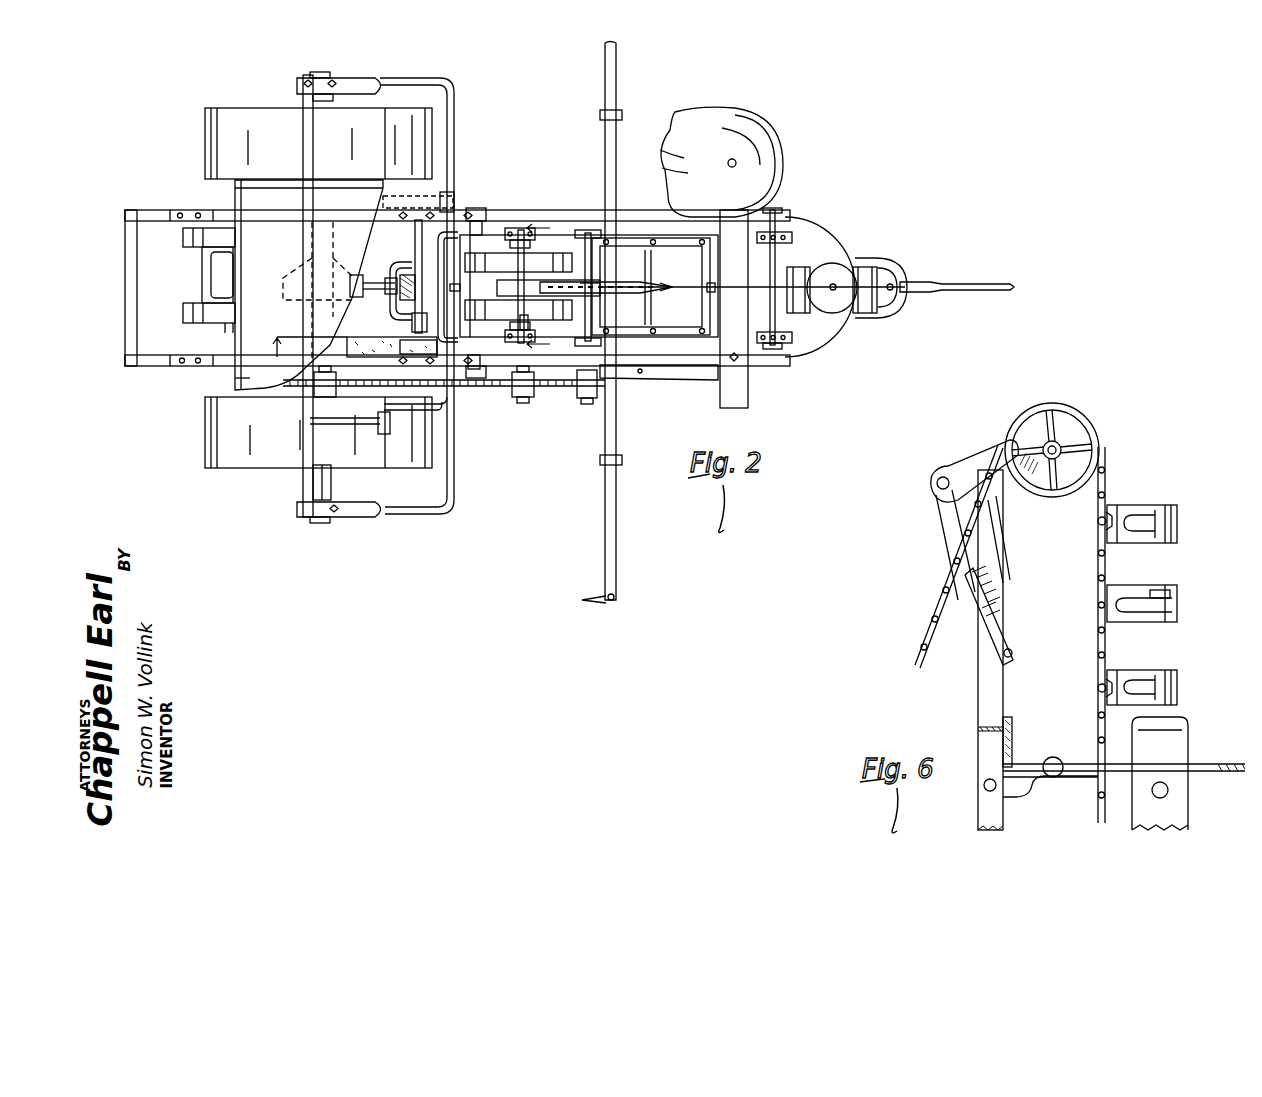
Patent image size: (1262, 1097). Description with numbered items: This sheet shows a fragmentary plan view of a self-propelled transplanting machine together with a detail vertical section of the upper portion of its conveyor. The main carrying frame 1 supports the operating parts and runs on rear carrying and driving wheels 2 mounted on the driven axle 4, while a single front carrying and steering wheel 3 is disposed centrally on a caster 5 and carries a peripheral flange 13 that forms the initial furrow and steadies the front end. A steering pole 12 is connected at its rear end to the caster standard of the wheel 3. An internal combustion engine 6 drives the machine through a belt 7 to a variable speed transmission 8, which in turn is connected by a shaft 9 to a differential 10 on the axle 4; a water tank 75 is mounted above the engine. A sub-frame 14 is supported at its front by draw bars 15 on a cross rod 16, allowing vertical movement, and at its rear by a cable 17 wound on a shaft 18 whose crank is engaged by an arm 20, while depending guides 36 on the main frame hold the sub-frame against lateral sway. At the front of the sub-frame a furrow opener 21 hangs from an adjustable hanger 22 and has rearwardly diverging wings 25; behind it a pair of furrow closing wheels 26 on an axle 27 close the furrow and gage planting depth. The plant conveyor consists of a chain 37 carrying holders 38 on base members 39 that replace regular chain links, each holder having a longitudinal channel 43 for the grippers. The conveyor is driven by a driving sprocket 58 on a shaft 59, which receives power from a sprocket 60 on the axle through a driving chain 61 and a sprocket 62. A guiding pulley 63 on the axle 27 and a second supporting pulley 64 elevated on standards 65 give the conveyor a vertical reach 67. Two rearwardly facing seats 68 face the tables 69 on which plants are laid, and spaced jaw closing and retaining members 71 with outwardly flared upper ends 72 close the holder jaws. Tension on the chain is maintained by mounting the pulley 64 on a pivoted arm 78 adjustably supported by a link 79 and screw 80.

In FIG. 2, the main carrying or running gear frame 1 is at (169, 214).
In FIG. 2, the rear carrying and driving wheels 2 is at (237, 120).
In FIG. 2, the front carrying and steering wheel 3 is at (896, 306).
In FIG. 2, the driven axle 4 is at (331, 488).
In FIG. 2, the caster 5 is at (845, 264).
In FIG. 2, the internal combustion engine 6 is at (220, 277).
In FIG. 2, the belt 7 is at (346, 342).
In FIG. 2, the variable speed transmission 8 is at (436, 203).
In FIG. 2, the shaft 9 is at (374, 284).
In FIG. 2, the differential 10 is at (371, 274).
In FIG. 2, the steering pole 12 is at (961, 284).
In FIG. 2, the peripheral flange 13 is at (795, 313).
In FIG. 2, the sub-frame 14 is at (630, 238).
In FIG. 2, the draw bars 15 is at (793, 236).
In FIG. 2, the cross rod 16 is at (775, 258).
In FIG. 2, the cable 17 is at (460, 288).
In FIG. 2, the shaft 18 is at (456, 254).
In FIG. 2, the arm 20 is at (354, 426).
In FIG. 2, the furrow opener 21 is at (630, 300).
In FIG. 2, the hanger 22 is at (712, 290).
In FIG. 2, the rearwardly diverging wings 25 is at (680, 285).
In FIG. 2, the furrow closing wheels 26 is at (552, 266).
In FIG. 2, the axle 27 is at (532, 325).
In FIG. 2, the depending guides 36 is at (472, 220).
In FIG. 6, the chain 37 is at (1108, 566).
In FIG. 6, the holders 38 is at (1135, 512).
In FIG. 6, the base members 39 is at (934, 612).
In FIG. 6, the longitudinal channels 43 is at (1178, 600).
In FIG. 2, the driving sprocket 58 is at (598, 283).
In FIG. 2, the shaft 59 is at (588, 254).
In FIG. 2, the sprocket 60 is at (304, 392).
In FIG. 2, the driving chain 61 is at (348, 388).
In FIG. 2, the sprocket 62 is at (581, 400).
In FIG. 2, the guiding pulley 63 is at (518, 280).
In FIG. 6, the second supporting pulley 64 is at (1050, 405).
In FIG. 2, the standards 65 is at (576, 236).
In FIG. 6, the standards 65 is at (985, 698).
In FIG. 6, the vertical reach 67 is at (1098, 730).
In FIG. 2, the seats 68 is at (693, 122).
In FIG. 6, the tables 69 is at (1236, 763).
In FIG. 2, the jaw closing and retaining members 71 is at (668, 295).
In FIG. 6, the jaw closing and retaining members 71 is at (1185, 810).
In FIG. 6, the outwardly flared upper ends 72 is at (1190, 728).
In FIG. 2, the tank 75 is at (252, 380).
In FIG. 6, the pivoted arm 78 is at (965, 466).
In FIG. 6, the link 79 is at (948, 522).
In FIG. 6, the screw 80 is at (1006, 600).